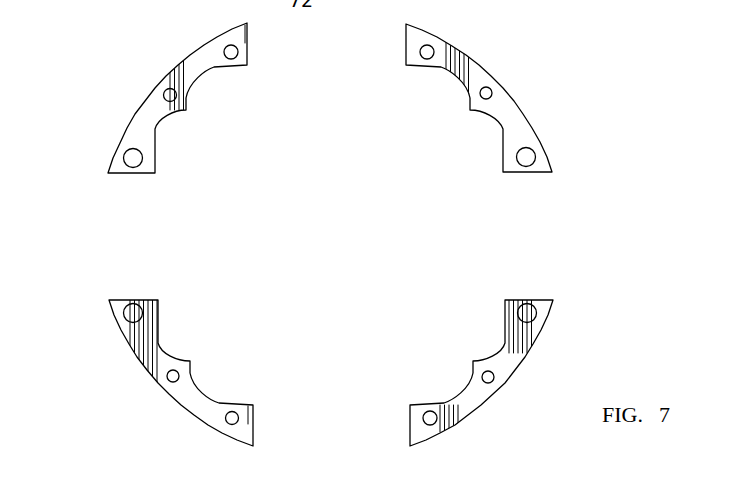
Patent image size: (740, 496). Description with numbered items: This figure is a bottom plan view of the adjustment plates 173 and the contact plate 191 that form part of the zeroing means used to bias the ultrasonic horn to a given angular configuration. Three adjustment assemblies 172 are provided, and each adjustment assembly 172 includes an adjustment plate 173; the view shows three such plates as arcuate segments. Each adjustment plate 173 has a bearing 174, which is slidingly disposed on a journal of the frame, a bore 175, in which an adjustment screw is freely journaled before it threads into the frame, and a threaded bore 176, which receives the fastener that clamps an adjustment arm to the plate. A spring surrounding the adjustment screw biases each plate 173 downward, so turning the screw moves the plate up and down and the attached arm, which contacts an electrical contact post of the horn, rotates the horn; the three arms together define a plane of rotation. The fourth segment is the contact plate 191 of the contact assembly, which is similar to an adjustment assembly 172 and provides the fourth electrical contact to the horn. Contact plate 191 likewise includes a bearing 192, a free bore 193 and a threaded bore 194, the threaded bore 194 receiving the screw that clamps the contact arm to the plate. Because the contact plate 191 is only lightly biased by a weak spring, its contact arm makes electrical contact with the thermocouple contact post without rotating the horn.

The adjustment assembly 172 is at (140, 133).
The adjustment plate 173 is at (175, 68).
The bearing 174 is at (143, 156).
The bore 175 is at (177, 97).
The threaded bore 176 is at (238, 51).
The contact plate 191 is at (477, 53).
The bearing 192 is at (543, 143).
The free bore 193 is at (493, 90).
The threaded bore 194 is at (433, 47).